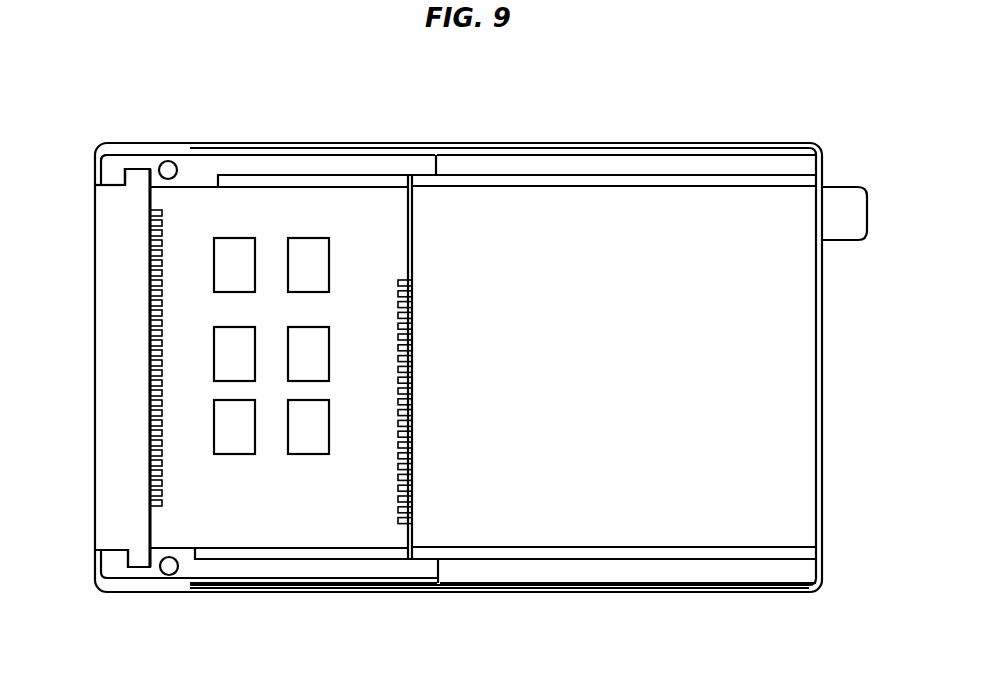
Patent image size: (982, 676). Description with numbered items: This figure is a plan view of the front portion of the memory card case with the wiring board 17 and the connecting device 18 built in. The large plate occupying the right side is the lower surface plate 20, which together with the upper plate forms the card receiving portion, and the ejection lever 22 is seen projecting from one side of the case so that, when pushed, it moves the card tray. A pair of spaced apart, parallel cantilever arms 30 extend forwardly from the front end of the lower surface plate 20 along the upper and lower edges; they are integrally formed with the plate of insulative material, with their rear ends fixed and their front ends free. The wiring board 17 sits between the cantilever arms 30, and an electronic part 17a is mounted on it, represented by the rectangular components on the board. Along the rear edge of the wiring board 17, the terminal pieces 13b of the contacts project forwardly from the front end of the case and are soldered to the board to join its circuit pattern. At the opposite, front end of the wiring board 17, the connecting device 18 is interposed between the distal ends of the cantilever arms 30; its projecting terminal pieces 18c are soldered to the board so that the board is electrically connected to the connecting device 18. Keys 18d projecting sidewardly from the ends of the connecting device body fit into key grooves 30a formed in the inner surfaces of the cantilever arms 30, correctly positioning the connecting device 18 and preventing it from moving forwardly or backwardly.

The terminal pieces 13b is at (398, 500).
The wiring board 17 is at (295, 205).
The electronic part 17a is at (318, 258).
The connecting device 18 is at (117, 344).
The projecting terminal pieces 18c is at (163, 473).
The keys 18d is at (130, 192).
The lower surface plate 20 is at (655, 208).
The ejection lever 22 is at (840, 205).
The cantilever arms 30 is at (263, 158).
The key grooves 30a is at (123, 165).